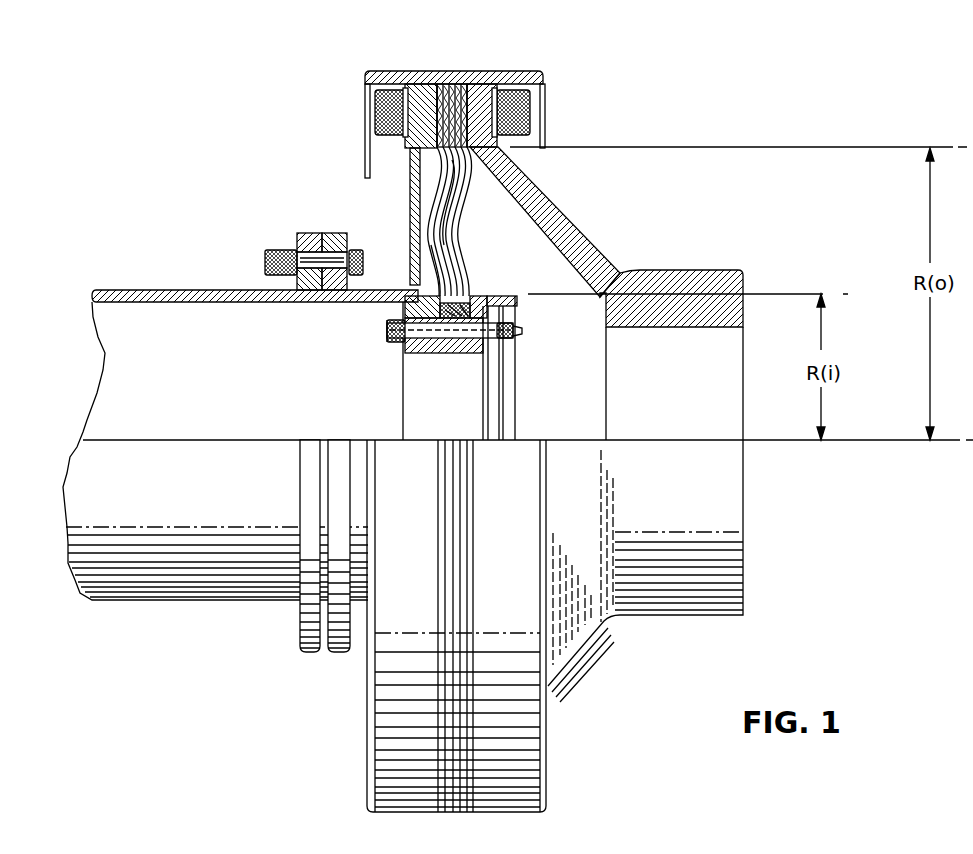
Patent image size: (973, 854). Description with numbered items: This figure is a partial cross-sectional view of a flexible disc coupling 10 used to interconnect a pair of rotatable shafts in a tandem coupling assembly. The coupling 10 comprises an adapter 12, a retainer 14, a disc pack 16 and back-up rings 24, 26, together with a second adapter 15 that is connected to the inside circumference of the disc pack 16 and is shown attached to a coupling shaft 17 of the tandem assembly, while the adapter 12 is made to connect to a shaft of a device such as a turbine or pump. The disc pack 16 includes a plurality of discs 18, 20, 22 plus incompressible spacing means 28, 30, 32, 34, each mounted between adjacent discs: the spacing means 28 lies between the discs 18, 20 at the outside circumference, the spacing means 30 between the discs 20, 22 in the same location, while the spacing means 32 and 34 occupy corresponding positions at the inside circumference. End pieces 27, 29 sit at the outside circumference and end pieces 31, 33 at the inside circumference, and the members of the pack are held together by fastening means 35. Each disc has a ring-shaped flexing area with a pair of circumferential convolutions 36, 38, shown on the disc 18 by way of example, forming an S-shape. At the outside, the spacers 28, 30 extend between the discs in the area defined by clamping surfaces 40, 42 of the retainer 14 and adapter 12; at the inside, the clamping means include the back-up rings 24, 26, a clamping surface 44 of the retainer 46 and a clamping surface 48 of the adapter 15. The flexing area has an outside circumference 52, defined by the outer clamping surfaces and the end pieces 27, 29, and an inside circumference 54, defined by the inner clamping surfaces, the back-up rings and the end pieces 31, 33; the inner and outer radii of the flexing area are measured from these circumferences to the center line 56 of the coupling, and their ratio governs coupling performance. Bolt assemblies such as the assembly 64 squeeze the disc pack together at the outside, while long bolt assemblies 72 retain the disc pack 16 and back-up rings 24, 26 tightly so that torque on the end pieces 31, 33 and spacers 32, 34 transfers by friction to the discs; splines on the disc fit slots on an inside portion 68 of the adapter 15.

The flexible disc coupling 10 is at (553, 818).
The adapter 12 is at (585, 237).
The retainer 14 is at (365, 176).
The adapter 15 is at (328, 304).
The disc pack 16 is at (452, 148).
The coupling shaft 17 is at (168, 290).
The disc 18 is at (442, 67).
The disc 20 is at (455, 67).
The disc 22 is at (467, 68).
The back-up ring 24 is at (423, 288).
The back-up ring 26 is at (474, 292).
The end piece 27 is at (436, 70).
The spacing means 28 is at (450, 67).
The end piece 29 is at (470, 69).
The spacing means 30 is at (461, 69).
The end piece 31 is at (432, 322).
The spacing means 32 is at (441, 320).
The end piece 33 is at (469, 320).
The spacing means 34 is at (456, 318).
The fastening means 35 is at (388, 325).
The convolution 36 is at (478, 192).
The convolution 38 is at (430, 244).
The clamping surface 40 is at (412, 72).
The clamping surface 42 is at (510, 69).
The clamping surface 44 is at (490, 295).
The retainer 46 is at (520, 388).
The clamping surface 48 is at (405, 316).
The outside circumference 52 is at (852, 147).
The inside circumference 54 is at (828, 294).
The center line 56 is at (898, 440).
The bolt assembly 64 is at (533, 110).
The inside portion 68 is at (419, 371).
The bolt assembly 72 is at (520, 330).